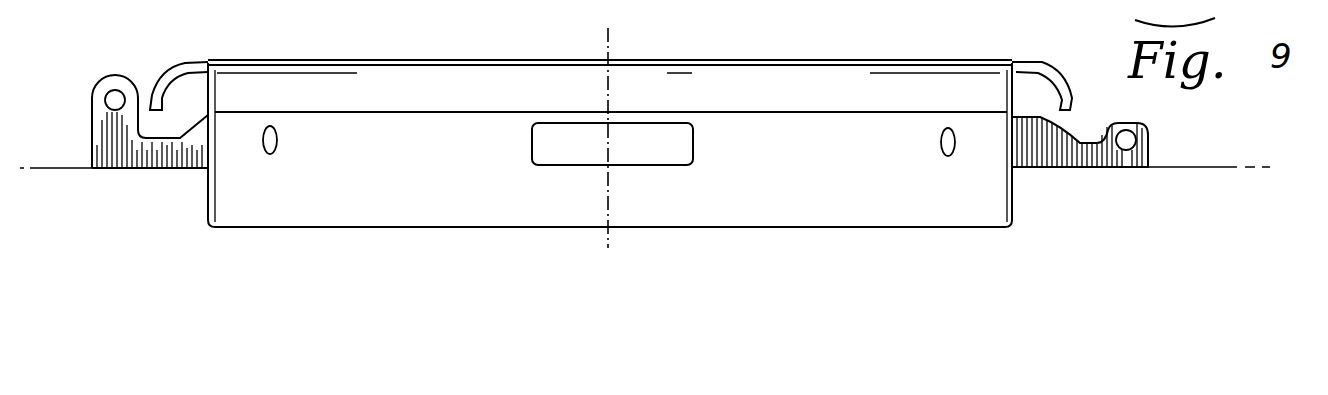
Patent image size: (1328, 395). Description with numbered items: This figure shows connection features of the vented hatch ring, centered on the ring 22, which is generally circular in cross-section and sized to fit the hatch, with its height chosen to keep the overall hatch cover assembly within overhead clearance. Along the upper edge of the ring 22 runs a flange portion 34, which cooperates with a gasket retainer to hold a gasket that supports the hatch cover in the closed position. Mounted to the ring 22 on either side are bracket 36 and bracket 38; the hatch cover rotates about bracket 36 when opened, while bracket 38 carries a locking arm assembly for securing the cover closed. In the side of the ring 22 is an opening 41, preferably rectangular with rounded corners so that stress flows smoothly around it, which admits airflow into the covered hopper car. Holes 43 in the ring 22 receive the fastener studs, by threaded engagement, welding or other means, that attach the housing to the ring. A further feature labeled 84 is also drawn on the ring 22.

The ring 22 is at (1016, 203).
The flange portion 34 is at (1027, 60).
The bracket 36 is at (140, 163).
The bracket 38 is at (1143, 150).
The opening 41 is at (682, 155).
The hole 43 is at (277, 153).
The hook flange 84 is at (180, 103).